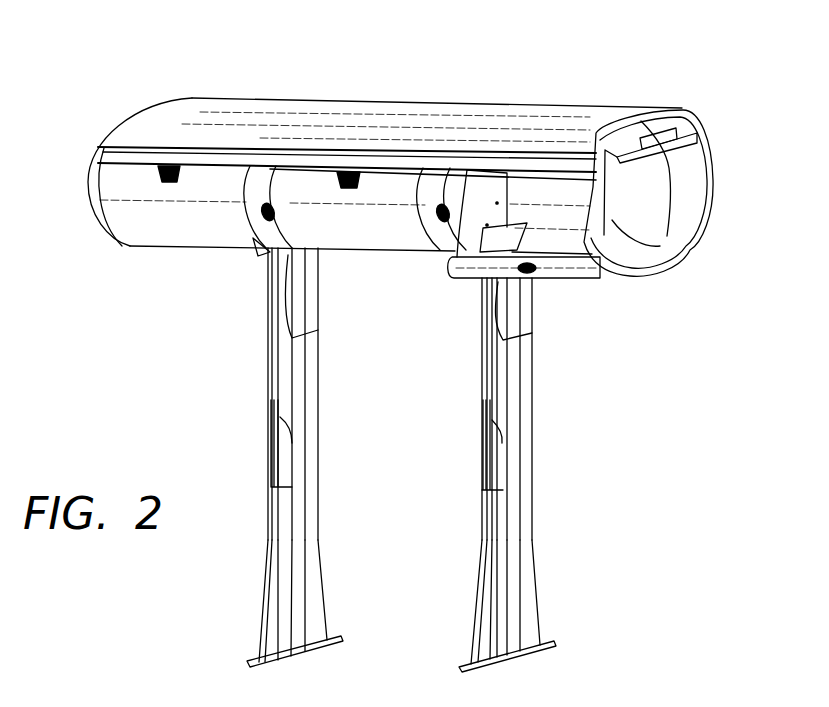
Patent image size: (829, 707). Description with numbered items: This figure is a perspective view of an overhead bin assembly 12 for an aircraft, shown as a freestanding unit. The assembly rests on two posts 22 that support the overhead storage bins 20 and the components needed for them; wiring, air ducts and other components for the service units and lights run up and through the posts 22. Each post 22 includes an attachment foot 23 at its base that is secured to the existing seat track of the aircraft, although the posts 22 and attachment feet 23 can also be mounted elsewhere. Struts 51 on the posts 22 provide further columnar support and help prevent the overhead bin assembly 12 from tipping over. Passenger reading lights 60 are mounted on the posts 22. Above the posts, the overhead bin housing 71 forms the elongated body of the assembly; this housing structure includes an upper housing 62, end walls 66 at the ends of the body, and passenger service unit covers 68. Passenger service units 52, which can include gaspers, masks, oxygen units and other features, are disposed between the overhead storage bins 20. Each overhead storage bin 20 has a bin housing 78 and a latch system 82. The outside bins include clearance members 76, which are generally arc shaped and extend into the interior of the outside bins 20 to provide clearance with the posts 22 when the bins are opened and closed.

The overhead bin assembly 12 is at (715, 108).
The overhead bin housing 71 is at (76, 108).
The overhead storage bin 20 is at (130, 223).
The post 22 is at (312, 460).
The attachment foot 23 is at (327, 645).
The strut 51 is at (272, 627).
The passenger service unit 52 is at (258, 188).
The passenger reading light 60 is at (300, 270).
The upper housing 62 is at (575, 118).
The end wall 66 is at (88, 190).
The passenger service unit cover 68 is at (448, 183).
The clearance member 76 is at (493, 247).
The bin housing 78 is at (550, 270).
The latch system 82 is at (166, 166).